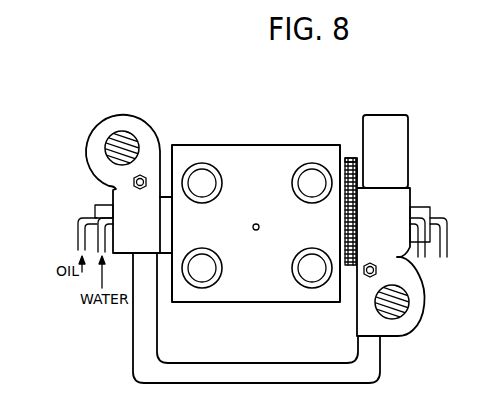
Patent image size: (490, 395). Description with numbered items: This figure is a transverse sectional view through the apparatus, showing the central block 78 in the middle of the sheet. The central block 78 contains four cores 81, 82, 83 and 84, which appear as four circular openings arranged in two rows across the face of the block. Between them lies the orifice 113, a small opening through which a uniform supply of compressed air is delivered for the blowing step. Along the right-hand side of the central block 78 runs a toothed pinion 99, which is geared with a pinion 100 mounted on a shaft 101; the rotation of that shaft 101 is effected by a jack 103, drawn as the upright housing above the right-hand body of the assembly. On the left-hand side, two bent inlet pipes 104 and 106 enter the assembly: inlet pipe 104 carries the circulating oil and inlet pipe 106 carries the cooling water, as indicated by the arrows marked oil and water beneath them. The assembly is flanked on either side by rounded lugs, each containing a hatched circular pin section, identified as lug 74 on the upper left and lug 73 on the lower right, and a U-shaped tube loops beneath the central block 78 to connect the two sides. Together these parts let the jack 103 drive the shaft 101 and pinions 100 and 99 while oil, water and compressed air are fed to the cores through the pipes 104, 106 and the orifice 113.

The right mounting lug with pivot pin 73 is at (398, 336).
The left mounting lug with pivot pin 74 is at (117, 132).
The central block 78 is at (242, 160).
The core 81 is at (209, 188).
The core 82 is at (308, 186).
The core 83 is at (204, 271).
The core 84 is at (309, 271).
The pinion 99 is at (349, 227).
The pinion 100 is at (350, 157).
The shaft 101 is at (358, 172).
The jack 103 is at (393, 132).
The inlet pipe 104 is at (82, 215).
The inlet pipe 106 is at (100, 238).
The orifice 113 is at (253, 227).